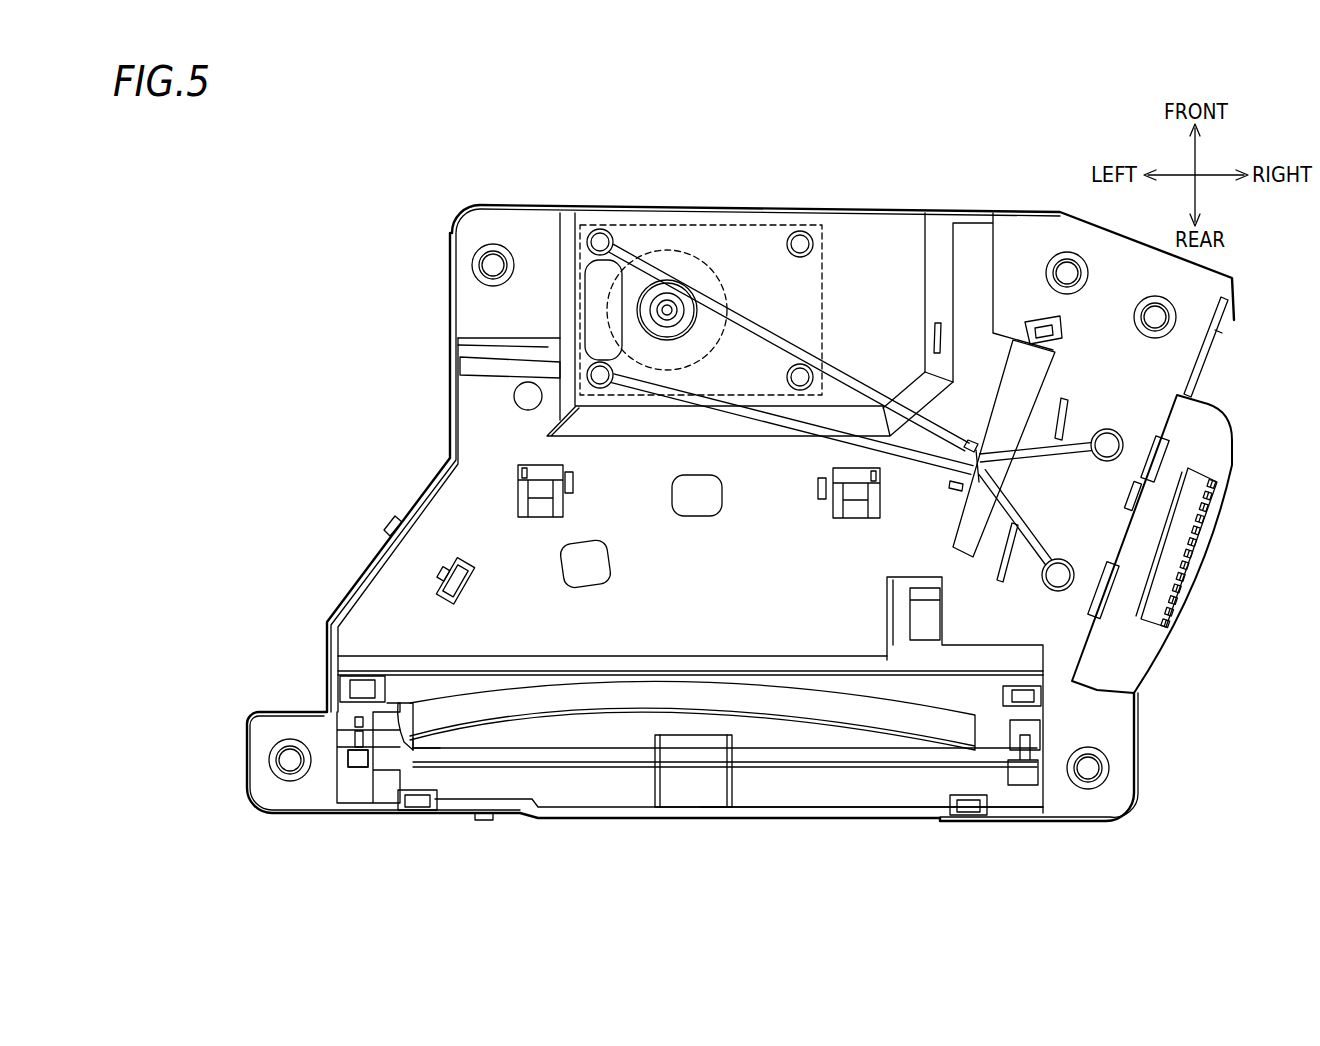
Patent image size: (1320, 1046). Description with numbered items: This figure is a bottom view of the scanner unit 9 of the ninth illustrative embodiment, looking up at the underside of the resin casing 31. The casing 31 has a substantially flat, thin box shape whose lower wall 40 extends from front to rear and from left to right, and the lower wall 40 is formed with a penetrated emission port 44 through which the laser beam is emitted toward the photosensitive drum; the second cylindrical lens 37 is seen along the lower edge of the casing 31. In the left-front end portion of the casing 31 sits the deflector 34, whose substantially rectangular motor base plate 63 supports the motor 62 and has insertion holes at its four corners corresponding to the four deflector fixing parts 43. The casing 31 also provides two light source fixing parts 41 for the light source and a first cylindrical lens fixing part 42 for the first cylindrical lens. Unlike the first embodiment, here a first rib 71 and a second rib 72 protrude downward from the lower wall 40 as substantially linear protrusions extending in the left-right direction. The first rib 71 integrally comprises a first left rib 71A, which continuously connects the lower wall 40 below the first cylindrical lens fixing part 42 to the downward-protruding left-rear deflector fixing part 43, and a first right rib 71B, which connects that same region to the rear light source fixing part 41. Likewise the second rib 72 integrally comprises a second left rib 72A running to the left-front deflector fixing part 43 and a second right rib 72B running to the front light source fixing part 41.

The scanner unit 9 is at (692, 887).
The casing 31 is at (843, 822).
The deflector 34 is at (751, 232).
The second cylindrical lens 37 is at (420, 752).
The lower wall 40 is at (807, 805).
The light source fixing part 41 is at (1107, 429).
The first cylindrical lens fixing part 42 is at (973, 440).
The deflector fixing part 43 is at (612, 231).
The emission port 44 is at (397, 745).
The motor 62 is at (672, 252).
The motor base plate 63 is at (712, 237).
The first rib 71 is at (856, 469).
The first left rib 71A is at (917, 476).
The first right rib 71B is at (1032, 535).
The second rib 72 is at (872, 363).
The second left rib 72A is at (876, 403).
The second right rib 72B is at (1080, 452).